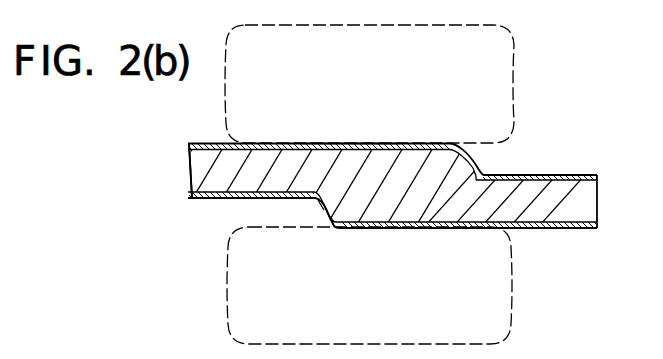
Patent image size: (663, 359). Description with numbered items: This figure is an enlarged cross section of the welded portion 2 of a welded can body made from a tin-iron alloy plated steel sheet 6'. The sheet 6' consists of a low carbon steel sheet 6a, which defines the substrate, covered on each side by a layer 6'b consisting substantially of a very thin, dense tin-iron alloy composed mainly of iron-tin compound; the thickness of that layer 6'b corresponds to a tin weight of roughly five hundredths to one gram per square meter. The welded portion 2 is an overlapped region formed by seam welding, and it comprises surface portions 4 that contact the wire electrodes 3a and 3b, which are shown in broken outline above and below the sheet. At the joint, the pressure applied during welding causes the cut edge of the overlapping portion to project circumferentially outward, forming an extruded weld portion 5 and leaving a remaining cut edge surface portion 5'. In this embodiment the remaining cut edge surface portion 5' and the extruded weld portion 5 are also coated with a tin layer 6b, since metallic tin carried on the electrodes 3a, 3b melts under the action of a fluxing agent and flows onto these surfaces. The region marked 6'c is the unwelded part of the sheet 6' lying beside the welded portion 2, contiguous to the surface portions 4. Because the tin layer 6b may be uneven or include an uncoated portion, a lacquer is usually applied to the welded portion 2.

The welded portion 2 is at (315, 216).
The wire electrode 3a is at (507, 74).
The wire electrode 3b is at (503, 309).
The surface portion 4 is at (352, 143).
The extruded weld portion 5 is at (314, 226).
The remaining cut edge surface portion 5' is at (341, 233).
The tin-iron alloy plated steel sheet 6' is at (413, 186).
The low carbon steel sheet 6a is at (200, 174).
The tin layer 6b is at (479, 160).
The layer 6'b is at (332, 140).
The lower clad layer 6'c is at (392, 227).